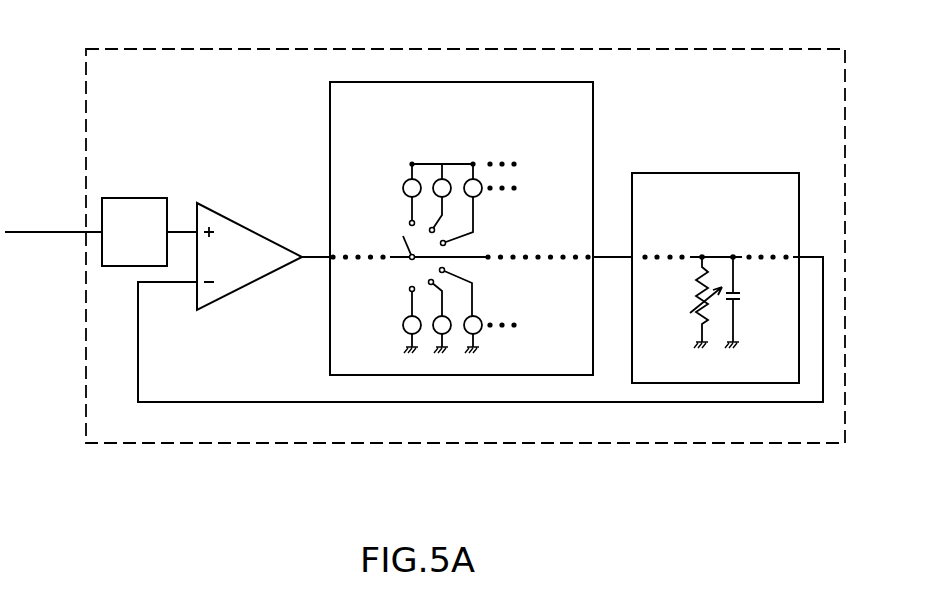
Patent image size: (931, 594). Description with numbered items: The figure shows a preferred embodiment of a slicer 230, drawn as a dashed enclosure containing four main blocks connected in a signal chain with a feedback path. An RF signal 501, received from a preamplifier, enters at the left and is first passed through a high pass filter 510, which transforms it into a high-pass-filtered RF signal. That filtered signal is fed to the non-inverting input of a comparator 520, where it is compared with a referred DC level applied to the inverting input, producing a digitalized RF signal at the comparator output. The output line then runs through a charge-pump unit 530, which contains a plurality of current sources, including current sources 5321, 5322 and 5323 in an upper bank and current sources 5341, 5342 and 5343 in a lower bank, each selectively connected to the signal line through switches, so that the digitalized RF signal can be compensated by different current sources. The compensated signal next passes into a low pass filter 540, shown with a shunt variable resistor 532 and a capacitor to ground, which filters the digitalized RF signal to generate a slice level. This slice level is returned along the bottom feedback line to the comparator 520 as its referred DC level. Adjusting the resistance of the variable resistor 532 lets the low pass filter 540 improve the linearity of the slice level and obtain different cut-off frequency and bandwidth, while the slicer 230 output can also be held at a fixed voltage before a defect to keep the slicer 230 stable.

The slicer 230 is at (487, 49).
The RF signal 501 is at (53, 214).
The high pass filter 510 is at (157, 253).
The comparator 520 is at (265, 267).
The charge-pump unit 530 is at (483, 135).
The current source 5321 is at (403, 199).
The current source 5322 is at (462, 172).
The current source 5323 is at (479, 197).
The current source 5341 is at (404, 333).
The current source 5342 is at (448, 332).
The current source 5343 is at (481, 320).
The low pass filter 540 is at (742, 227).
The variable resistor 532 is at (680, 302).